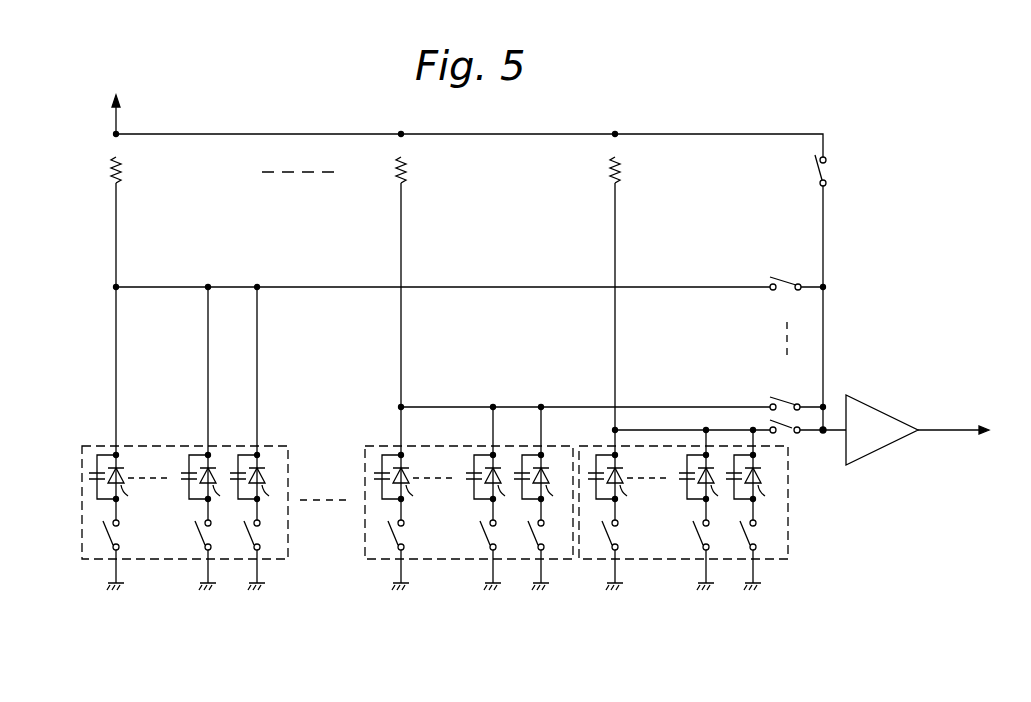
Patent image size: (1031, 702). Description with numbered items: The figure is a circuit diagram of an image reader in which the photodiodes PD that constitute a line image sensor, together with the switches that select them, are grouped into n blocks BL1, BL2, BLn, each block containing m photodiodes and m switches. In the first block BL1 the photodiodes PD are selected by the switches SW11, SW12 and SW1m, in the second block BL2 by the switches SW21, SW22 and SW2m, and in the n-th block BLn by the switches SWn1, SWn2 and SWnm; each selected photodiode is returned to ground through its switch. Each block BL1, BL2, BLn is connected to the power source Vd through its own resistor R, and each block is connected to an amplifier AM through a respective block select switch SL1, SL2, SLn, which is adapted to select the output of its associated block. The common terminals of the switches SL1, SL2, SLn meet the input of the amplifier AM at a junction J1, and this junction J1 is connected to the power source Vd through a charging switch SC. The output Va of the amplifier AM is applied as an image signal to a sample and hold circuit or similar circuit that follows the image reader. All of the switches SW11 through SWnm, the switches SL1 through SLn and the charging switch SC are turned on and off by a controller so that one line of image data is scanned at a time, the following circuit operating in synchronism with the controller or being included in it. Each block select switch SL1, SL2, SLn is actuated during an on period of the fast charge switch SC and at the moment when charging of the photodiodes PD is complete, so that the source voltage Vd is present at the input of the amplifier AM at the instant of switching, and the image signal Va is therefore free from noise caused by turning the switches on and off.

The power source Vd is at (117, 102).
The resistor R is at (123, 173).
The charging switch SC is at (813, 177).
The switch SLn is at (784, 276).
The switch SL2 is at (784, 396).
The switch SL1 is at (784, 424).
The junction J1 is at (821, 442).
The amplifier AM is at (884, 409).
The output Va is at (968, 431).
The photodiode PD is at (432, 487).
The block BLn is at (160, 560).
The block BL2 is at (440, 560).
The block BL1 is at (660, 560).
The switch SWnm is at (106, 538).
The switch SWn2 is at (197, 539).
The switch SWn1 is at (247, 538).
The switch SW2m is at (391, 538).
The switch SW22 is at (482, 539).
The switch SW21 is at (531, 538).
The switch SW1m is at (605, 538).
The switch SW12 is at (695, 539).
The switch SW11 is at (745, 538).